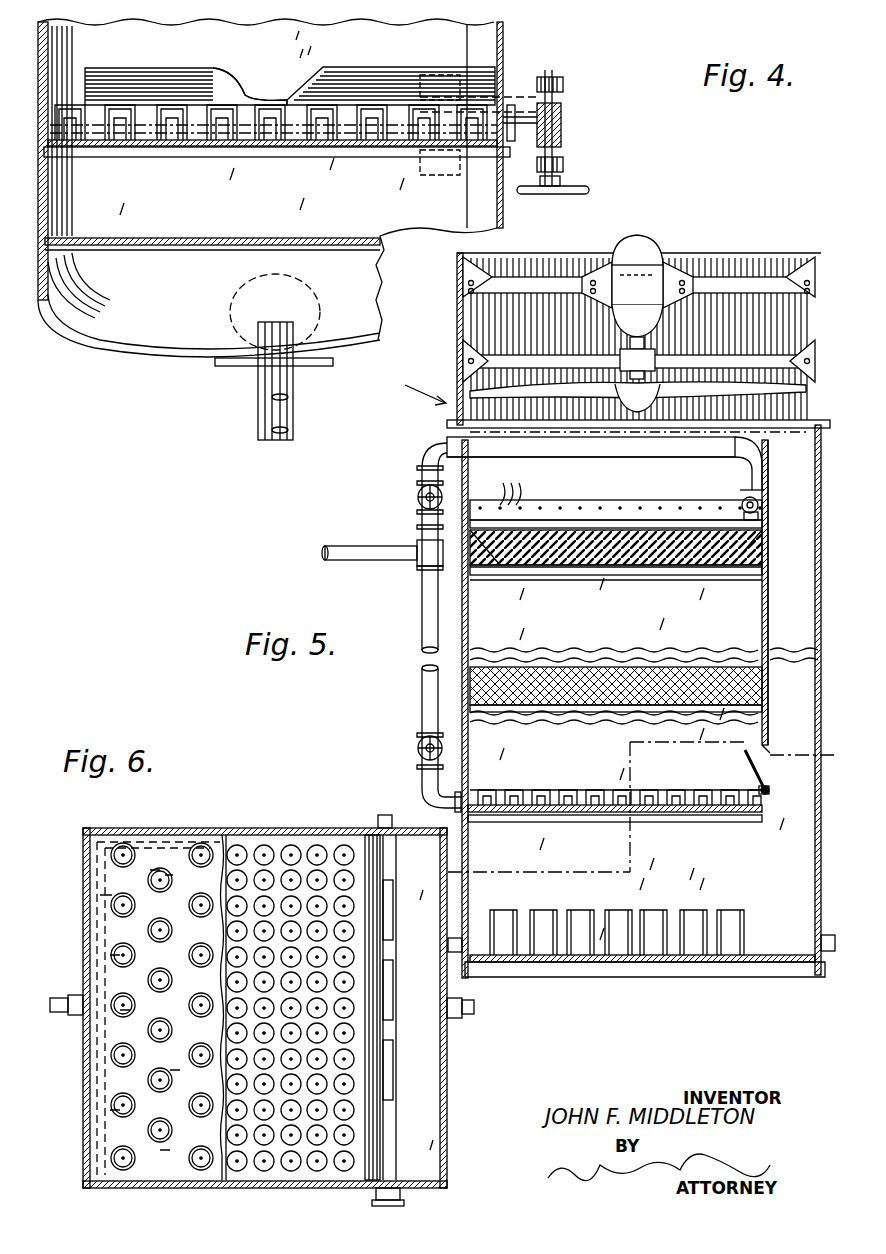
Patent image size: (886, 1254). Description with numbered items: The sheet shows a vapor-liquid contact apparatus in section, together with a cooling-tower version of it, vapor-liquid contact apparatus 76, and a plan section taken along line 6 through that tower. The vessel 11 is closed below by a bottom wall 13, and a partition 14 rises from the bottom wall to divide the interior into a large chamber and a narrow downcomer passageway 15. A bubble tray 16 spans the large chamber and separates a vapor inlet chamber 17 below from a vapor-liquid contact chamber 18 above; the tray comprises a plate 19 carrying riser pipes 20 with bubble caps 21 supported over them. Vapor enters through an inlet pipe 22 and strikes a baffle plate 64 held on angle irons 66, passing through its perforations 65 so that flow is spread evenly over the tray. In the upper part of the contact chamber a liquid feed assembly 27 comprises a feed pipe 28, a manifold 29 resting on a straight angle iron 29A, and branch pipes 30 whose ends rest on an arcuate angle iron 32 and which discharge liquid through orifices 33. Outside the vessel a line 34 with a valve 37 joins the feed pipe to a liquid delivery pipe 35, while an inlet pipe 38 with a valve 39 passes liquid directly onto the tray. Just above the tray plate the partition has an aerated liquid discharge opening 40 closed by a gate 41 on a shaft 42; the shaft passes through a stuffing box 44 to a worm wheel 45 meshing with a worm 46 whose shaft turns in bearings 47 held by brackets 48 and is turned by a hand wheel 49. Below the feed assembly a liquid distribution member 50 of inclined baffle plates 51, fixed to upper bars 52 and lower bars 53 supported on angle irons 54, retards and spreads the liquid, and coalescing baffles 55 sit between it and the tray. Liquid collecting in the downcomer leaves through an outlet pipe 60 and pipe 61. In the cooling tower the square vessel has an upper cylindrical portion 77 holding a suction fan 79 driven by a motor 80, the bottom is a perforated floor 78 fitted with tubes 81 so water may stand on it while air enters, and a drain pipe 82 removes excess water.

In FIG. 5, the section line 6 is at (808, 752).
In FIG. 4, the vessel 11 is at (458, 42).
In FIG. 5, the vessel 11 is at (460, 597).
In FIG. 6, the vessel 11 is at (87, 952).
In FIG. 4, the bottom wall 13 is at (93, 318).
In FIG. 4, the partition 14 is at (518, 48).
In FIG. 5, the partition 14 is at (740, 670).
In FIG. 6, the partition 14 is at (396, 868).
In FIG. 5, the downcomer passageway 15 is at (794, 624).
In FIG. 6, the downcomer passageway 15 is at (418, 1020).
In FIG. 4, the bubble tray 16 is at (192, 92).
In FIG. 5, the bubble tray 16 is at (568, 770).
In FIG. 6, the bubble tray 16 is at (257, 840).
In FIG. 4, the vapor inlet chamber 17 is at (262, 186).
In FIG. 5, the vapor inlet chamber 17 is at (647, 904).
In FIG. 4, the vapor-liquid contact chamber 18 is at (314, 42).
In FIG. 5, the vapor-liquid contact chamber 18 is at (627, 734).
In FIG. 4, the plate 19 is at (150, 142).
In FIG. 5, the plate 19 is at (612, 812).
In FIG. 6, the plate 19 is at (224, 871).
In FIG. 4, the riser pipes 20 is at (220, 138).
In FIG. 5, the riser pipes 20 is at (692, 822).
In FIG. 4, the bubble caps 21 is at (172, 100).
In FIG. 5, the bubble caps 21 is at (606, 790).
In FIG. 6, the bubble caps 21 is at (308, 842).
In FIG. 4, the inlet pipe 22 is at (263, 388).
In FIG. 5, the liquid feed assembly 27 is at (672, 428).
In FIG. 5, the feed pipe 28 is at (615, 452).
In FIG. 5, the manifold 29 is at (745, 502).
In FIG. 5, the straight angle iron 29A is at (755, 514).
In FIG. 5, the branch pipes 30 is at (585, 500).
In FIG. 5, the arcuate-shaped angle iron 32 is at (467, 523).
In FIG. 5, the discharge orifices 33 is at (515, 482).
In FIG. 5, the line 34 is at (420, 478).
In FIG. 5, the liquid delivery pipe 35 is at (343, 563).
In FIG. 5, the valve 37 is at (418, 497).
In FIG. 5, the inlet pipe 38 is at (468, 800).
In FIG. 5, the valve 39 is at (418, 748).
In FIG. 4, the aerated liquid discharge opening 40 is at (270, 80).
In FIG. 5, the aerated liquid discharge opening 40 is at (770, 775).
In FIG. 4, the gate 41 is at (362, 72).
In FIG. 5, the gate 41 is at (745, 757).
In FIG. 6, the gate 41 is at (380, 1056).
In FIG. 4, the shaft 42 is at (536, 120).
In FIG. 5, the shaft 42 is at (760, 808).
In FIG. 6, the shaft 42 is at (395, 1112).
In FIG. 4, the stuffing box 44 is at (500, 157).
In FIG. 6, the stuffing box 44 is at (402, 1195).
In FIG. 4, the worm wheel 45 is at (560, 130).
In FIG. 4, the worm 46 is at (560, 118).
In FIG. 4, the bearings 47 is at (565, 80).
In FIG. 4, the brackets 48 is at (565, 87).
In FIG. 4, the hand wheel 49 is at (575, 194).
In FIG. 5, the liquid distribution member 50 is at (590, 580).
In FIG. 5, the baffle plates 51 is at (515, 552).
In FIG. 5, the bars 52 is at (633, 527).
In FIG. 5, the bars 53 is at (677, 558).
In FIG. 5, the angle irons 54 is at (630, 576).
In FIG. 5, the liquid coalescing baffles 55 is at (540, 673).
In FIG. 4, the outlet pipe 60 is at (232, 357).
In FIG. 5, the outlet pipe 60 is at (817, 950).
In FIG. 6, the outlet pipe 60 is at (470, 1010).
In FIG. 4, the pipe 61 is at (295, 420).
In FIG. 4, the baffle plate 64 is at (152, 241).
In FIG. 4, the perforations 65 is at (190, 249).
In FIG. 4, the angle irons 66 is at (52, 262).
In FIG. 5, the vapor-liquid contact apparatus 76 is at (412, 389).
In FIG. 6, the vapor-liquid contact apparatus 76 is at (93, 821).
In FIG. 5, the upper cylindrical portion 77 is at (458, 355).
In FIG. 5, the perforated floor 78 is at (617, 962).
In FIG. 6, the perforated floor 78 is at (145, 855).
In FIG. 5, the suction fan 79 is at (570, 383).
In FIG. 5, the motor 80 is at (652, 320).
In FIG. 5, the tube 81 is at (578, 910).
In FIG. 6, the tube 81 is at (190, 955).
In FIG. 5, the drain pipe 82 is at (470, 945).
In FIG. 6, the drain pipe 82 is at (62, 1018).